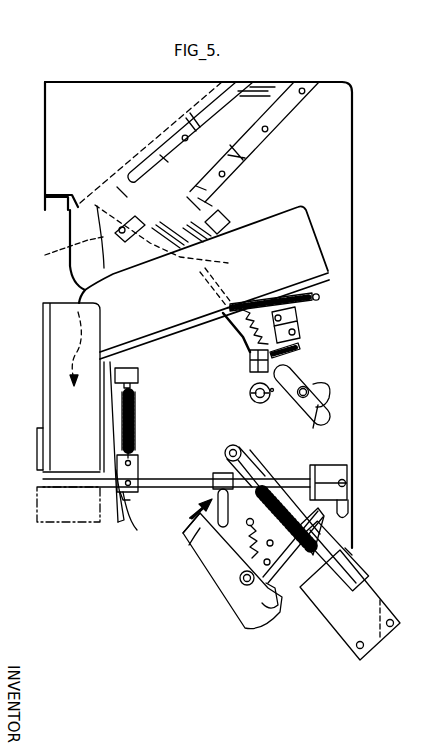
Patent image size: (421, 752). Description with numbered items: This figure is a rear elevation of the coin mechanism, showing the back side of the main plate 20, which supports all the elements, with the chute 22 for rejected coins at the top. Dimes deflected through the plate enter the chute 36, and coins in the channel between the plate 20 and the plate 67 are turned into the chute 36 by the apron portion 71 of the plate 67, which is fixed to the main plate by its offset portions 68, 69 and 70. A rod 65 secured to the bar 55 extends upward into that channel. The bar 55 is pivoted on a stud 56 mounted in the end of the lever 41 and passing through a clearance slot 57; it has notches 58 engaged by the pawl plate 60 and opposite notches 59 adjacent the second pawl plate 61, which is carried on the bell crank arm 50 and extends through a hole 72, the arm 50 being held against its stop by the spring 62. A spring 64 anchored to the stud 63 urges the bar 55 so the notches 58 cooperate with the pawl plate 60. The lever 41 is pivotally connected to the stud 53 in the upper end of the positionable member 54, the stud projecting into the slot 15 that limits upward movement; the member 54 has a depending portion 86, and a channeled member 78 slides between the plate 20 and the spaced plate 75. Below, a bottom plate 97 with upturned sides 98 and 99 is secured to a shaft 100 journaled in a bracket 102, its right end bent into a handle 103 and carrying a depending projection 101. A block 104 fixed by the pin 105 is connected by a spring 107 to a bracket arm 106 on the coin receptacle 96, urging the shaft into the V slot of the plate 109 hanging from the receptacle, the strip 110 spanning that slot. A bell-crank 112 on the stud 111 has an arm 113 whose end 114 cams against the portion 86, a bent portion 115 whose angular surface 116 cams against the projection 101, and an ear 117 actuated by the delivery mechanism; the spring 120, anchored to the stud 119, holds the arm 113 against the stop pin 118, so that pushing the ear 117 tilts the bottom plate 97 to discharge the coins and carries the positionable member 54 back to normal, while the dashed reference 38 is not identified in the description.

The main plate 20 is at (343, 173).
The chute 22 is at (97, 88).
The chute 36 is at (262, 218).
The tape path 38 is at (62, 249).
The lever 41 is at (304, 422).
The bell crank arm 50 is at (250, 377).
The stud 53 is at (238, 449).
The positionable member 54 is at (278, 492).
The bar 55 is at (303, 366).
The stud 56 is at (293, 398).
The clearance slot 57 is at (328, 390).
The notches 58 is at (300, 323).
The notches 59 is at (283, 393).
The pawl plate 60 is at (285, 317).
The second pawl plate 61 is at (248, 360).
The spring 62 is at (300, 347).
The stud 63 is at (320, 299).
The spring 64 is at (300, 297).
The rod 65 is at (133, 157).
The plate 67 is at (252, 115).
The offset portion 68 is at (257, 143).
The offset portion 69 is at (192, 120).
The offset portion 70 is at (98, 223).
The apron portion 71 is at (214, 203).
The hole 72 is at (250, 357).
The plate 75 is at (370, 580).
The channeled member 78 is at (345, 597).
The depending portion 86 is at (347, 552).
The coin receptacle 96 is at (53, 353).
The bottom plate 97 is at (50, 480).
The upturned side 98 is at (37, 453).
The upturned side 99 is at (100, 440).
The shaft 100 is at (158, 478).
The depending projection 101 is at (204, 500).
The bracket 102 is at (338, 465).
The handle 103 is at (347, 479).
The block 104 is at (133, 468).
The pin 105 is at (124, 491).
The bracket arm 106 is at (122, 368).
The spring 107 is at (134, 413).
The plate 109 is at (129, 508).
The strip 110 is at (122, 522).
The stud 111 is at (275, 590).
The bell-crank 112 is at (214, 584).
The arm 113 is at (291, 556).
The end 114 is at (317, 520).
The bent portion 115 is at (189, 558).
The angular end surface 116 is at (190, 518).
The ear 117 is at (280, 603).
The stop pin 118 is at (266, 540).
The stud 119 is at (250, 519).
The spring 120 is at (264, 560).
The slot 15 is at (253, 467).